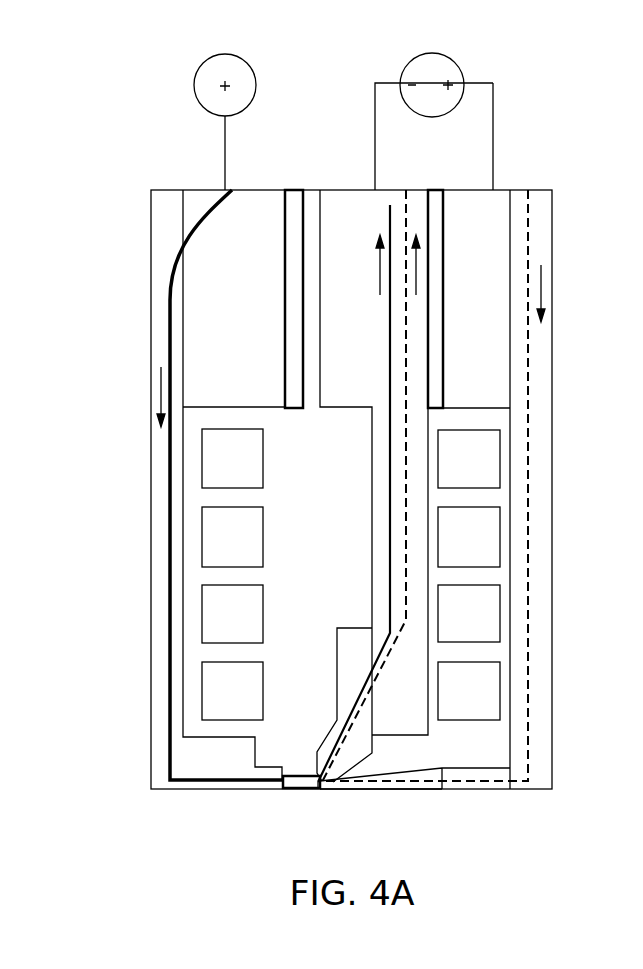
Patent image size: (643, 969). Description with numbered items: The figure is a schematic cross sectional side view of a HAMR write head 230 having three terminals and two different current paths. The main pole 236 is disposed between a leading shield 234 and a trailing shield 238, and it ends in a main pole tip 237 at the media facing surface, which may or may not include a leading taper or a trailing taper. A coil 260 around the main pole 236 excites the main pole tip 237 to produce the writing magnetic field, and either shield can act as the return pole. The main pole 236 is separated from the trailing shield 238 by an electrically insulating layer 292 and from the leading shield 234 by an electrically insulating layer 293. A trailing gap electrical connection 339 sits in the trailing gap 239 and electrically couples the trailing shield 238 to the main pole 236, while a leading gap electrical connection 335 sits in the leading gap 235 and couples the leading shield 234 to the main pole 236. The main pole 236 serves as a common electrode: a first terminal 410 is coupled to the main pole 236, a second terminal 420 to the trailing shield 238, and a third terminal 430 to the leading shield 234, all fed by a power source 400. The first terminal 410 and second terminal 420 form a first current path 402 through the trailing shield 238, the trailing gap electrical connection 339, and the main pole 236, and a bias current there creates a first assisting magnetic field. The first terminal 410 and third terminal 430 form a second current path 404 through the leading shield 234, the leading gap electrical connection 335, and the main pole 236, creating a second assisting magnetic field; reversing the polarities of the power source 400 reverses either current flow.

The HAMR write head 230 is at (124, 186).
The power source 400 is at (207, 72).
The third terminal 430 is at (225, 150).
The first terminal 410 is at (375, 130).
The second terminal 420 is at (493, 128).
The leading shield 234 is at (162, 598).
The second current path 404 is at (170, 331).
The electrically insulating layer 293 is at (292, 250).
The electrically insulating layer 292 is at (437, 248).
The main pole 236 is at (376, 520).
The trailing shield 238 is at (533, 515).
The first current path 402 is at (532, 350).
The coil 260 is at (212, 470).
The main pole tip 237 is at (343, 683).
The leading gap 235 is at (292, 800).
The leading gap electrical connection 335 is at (318, 790).
The trailing gap electrical connection 339 is at (418, 783).
The trailing gap 239 is at (390, 803).